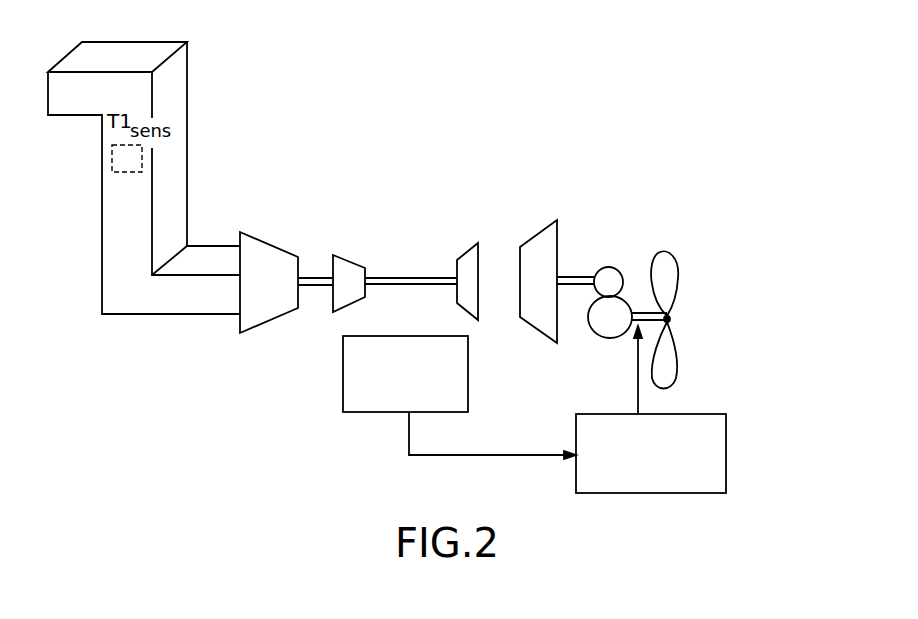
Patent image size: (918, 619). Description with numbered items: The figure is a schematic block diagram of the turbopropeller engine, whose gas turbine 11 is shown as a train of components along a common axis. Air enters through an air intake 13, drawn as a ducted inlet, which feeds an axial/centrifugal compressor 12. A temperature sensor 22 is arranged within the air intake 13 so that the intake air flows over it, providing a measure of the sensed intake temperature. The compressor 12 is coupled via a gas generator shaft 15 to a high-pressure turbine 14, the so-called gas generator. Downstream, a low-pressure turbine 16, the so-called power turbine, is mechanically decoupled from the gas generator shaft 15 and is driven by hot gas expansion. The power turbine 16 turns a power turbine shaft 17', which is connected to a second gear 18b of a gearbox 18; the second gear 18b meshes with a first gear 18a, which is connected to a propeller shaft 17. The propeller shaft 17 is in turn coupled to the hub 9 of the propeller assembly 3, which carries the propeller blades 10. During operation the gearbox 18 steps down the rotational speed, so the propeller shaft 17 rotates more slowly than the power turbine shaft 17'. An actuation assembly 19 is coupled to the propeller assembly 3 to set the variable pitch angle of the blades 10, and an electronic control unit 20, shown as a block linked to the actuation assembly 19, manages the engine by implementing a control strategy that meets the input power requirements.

The propeller assembly 3 is at (699, 271).
The hub 9 is at (668, 318).
The propeller blades 10 is at (675, 277).
The gas turbine 11 is at (403, 166).
The axial/centrifugal compressor 12 is at (308, 242).
The air intake 13 is at (218, 226).
The high-pressure turbine 14 is at (460, 258).
The gas generator shaft 15 is at (400, 277).
The low-pressure turbine 16 is at (540, 235).
The propeller shaft 17 is at (649, 278).
The power turbine shaft 17' is at (582, 241).
The gearbox 18 is at (596, 301).
The first gear 18a is at (607, 332).
The second gear 18b is at (615, 268).
The actuation assembly 19 is at (718, 445).
The electronic control unit 20 is at (465, 387).
The temperature sensor 22 is at (111, 158).